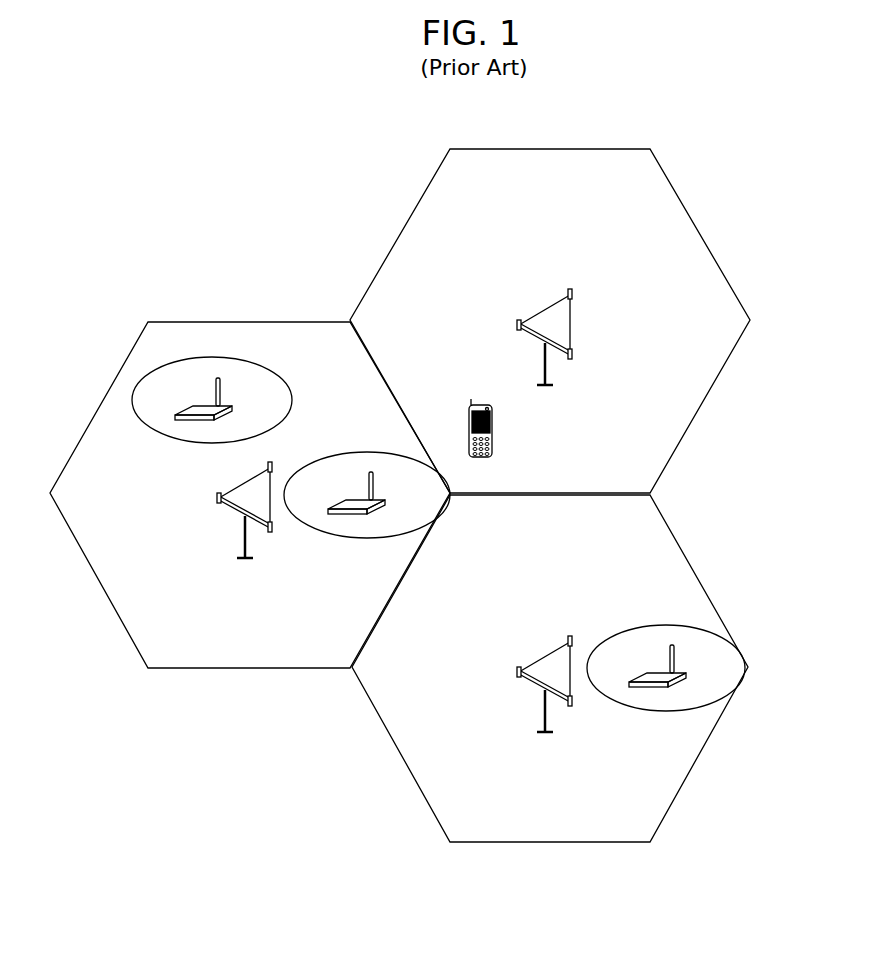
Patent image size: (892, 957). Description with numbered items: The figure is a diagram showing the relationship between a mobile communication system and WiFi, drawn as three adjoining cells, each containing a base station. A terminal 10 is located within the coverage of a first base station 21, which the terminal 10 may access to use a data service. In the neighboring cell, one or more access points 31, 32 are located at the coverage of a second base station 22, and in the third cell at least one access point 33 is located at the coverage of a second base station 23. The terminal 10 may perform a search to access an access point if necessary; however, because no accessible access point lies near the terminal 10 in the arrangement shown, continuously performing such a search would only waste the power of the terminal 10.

The terminal 10 is at (493, 432).
The first base station 21 is at (543, 305).
The second base station 22 is at (243, 516).
The second base station 23 is at (543, 690).
The access point 31 is at (203, 405).
The access point 32 is at (357, 500).
The access point 33 is at (650, 688).